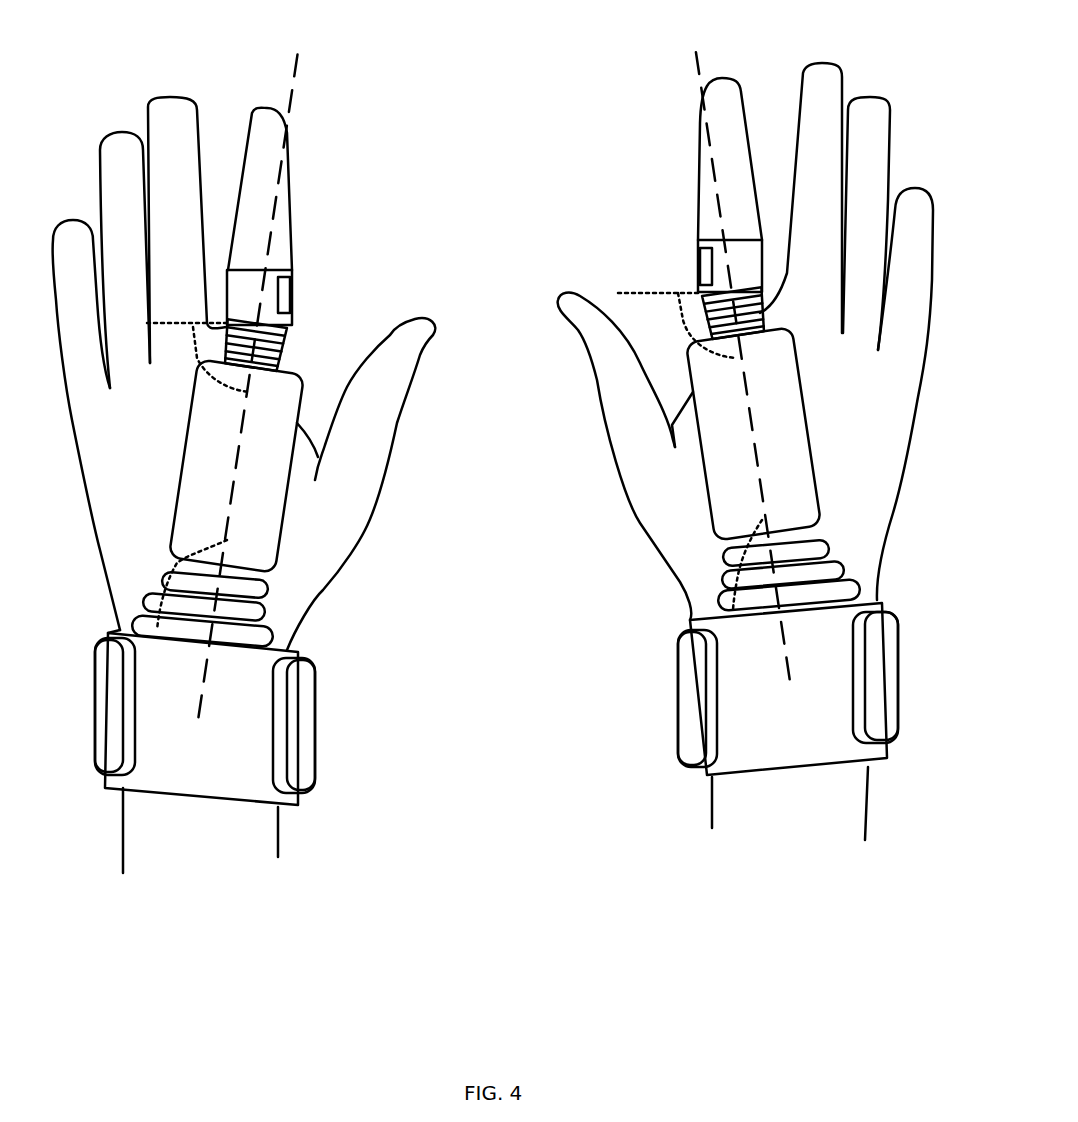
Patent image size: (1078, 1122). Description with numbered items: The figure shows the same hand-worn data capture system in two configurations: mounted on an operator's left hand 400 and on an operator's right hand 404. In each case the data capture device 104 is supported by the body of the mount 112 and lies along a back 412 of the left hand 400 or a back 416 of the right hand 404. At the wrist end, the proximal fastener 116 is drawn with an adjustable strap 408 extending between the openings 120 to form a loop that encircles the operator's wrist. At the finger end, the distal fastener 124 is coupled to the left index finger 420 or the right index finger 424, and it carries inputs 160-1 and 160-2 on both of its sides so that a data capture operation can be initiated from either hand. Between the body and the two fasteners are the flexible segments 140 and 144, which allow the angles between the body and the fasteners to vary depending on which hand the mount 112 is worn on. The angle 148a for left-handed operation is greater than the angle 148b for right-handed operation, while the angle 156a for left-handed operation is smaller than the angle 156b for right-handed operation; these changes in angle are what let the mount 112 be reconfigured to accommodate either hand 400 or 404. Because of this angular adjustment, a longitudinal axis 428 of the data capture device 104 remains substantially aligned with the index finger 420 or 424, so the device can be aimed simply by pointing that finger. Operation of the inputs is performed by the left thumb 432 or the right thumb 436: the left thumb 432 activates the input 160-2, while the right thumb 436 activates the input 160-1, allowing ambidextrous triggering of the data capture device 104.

The data capture device 104 is at (194, 480).
The mount 112 is at (276, 593).
The proximal fastener 116 is at (218, 763).
The openings 120 is at (118, 788).
The distal fastener 124 is at (296, 267).
The flexible segment 140 is at (150, 577).
The flexible segment 144 is at (294, 328).
The angle for left-handed operation 148a is at (192, 576).
The angle for right-handed operation 148b is at (737, 563).
The angle for left-handed operation 156a is at (198, 365).
The angle for right-handed operation 156b is at (677, 325).
The input 160-1 is at (698, 265).
The input 160-2 is at (292, 297).
The left hand 400 is at (254, 334).
The right hand 404 is at (738, 310).
The adjustable strap 408 is at (300, 720).
The back of the left hand 412 is at (156, 418).
The back of the right hand 416 is at (866, 389).
The left index finger 420 is at (287, 221).
The right index finger 424 is at (740, 87).
The longitudinal axis 428 is at (303, 68).
The left thumb 432 is at (375, 438).
The right thumb 436 is at (610, 395).